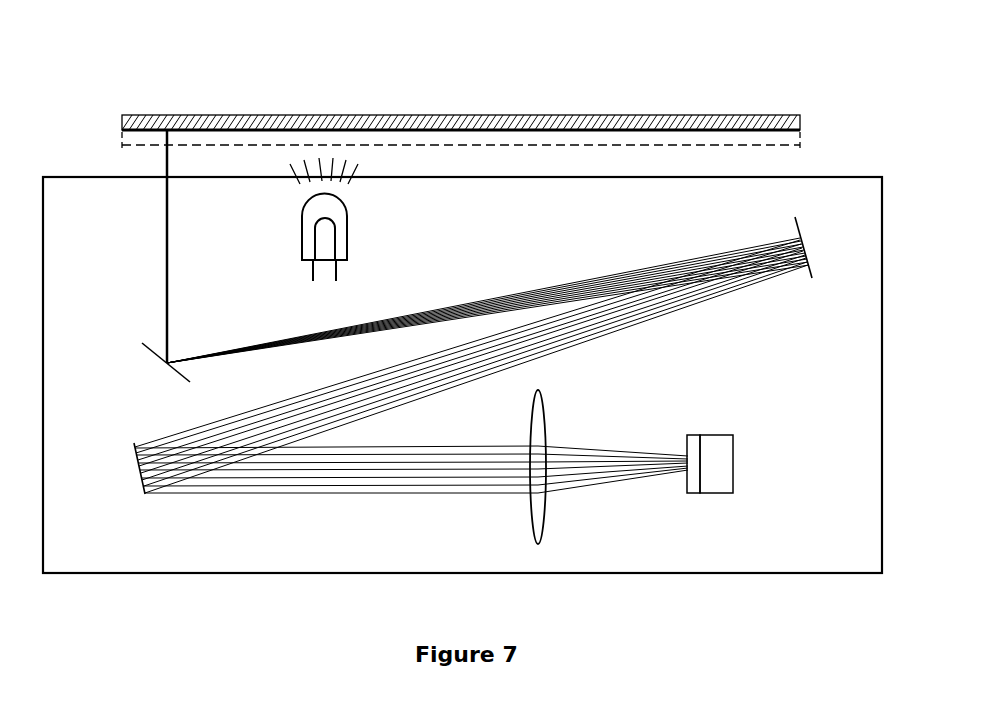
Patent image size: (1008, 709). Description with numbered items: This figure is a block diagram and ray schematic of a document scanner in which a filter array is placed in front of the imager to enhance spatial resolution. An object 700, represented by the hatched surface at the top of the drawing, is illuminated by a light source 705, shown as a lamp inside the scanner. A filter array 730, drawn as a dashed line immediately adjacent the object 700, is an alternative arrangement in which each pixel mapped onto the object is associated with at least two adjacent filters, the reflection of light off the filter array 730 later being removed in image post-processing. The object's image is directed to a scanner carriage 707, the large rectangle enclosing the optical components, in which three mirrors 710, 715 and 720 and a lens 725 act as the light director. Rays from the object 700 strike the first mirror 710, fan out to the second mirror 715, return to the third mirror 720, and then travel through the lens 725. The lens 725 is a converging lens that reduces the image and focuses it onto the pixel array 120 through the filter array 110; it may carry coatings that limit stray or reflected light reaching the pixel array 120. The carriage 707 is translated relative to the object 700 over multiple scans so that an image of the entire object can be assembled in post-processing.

The object 700 is at (240, 116).
The filter array 730 is at (150, 146).
The light source 705 is at (300, 226).
The mirror 710 is at (158, 365).
The mirror 715 is at (808, 243).
The mirror 720 is at (135, 475).
The lens 725 is at (530, 520).
The filter array 110 is at (690, 495).
The pixel array 120 is at (712, 495).
The scanner carriage 707 is at (653, 575).